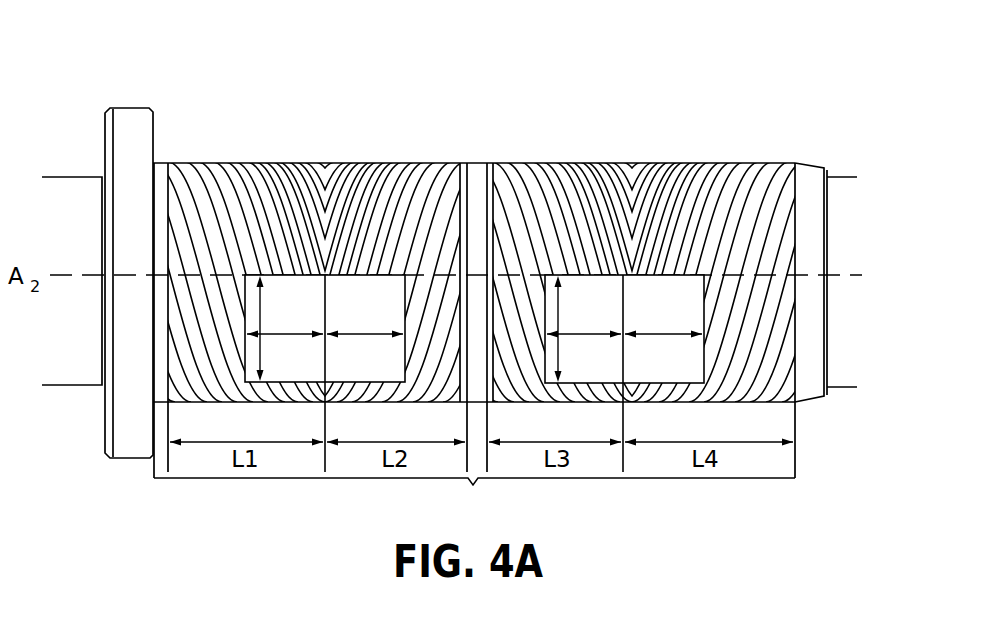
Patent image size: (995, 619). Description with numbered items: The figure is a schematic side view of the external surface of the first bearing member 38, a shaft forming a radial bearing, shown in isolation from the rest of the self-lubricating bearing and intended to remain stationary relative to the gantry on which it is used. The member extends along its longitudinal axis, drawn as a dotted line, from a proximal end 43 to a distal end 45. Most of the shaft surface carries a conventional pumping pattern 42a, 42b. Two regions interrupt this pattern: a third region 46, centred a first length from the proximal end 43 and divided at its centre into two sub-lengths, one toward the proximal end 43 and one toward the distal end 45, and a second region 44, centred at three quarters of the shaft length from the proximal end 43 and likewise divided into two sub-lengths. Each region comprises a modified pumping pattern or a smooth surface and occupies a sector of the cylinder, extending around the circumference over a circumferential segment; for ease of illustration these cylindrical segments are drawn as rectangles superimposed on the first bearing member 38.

The first bearing member 38 is at (827, 224).
The conventional pumping pattern 42a is at (573, 170).
The conventional pumping pattern 42b is at (281, 170).
The proximal end 43 is at (119, 117).
The second region 44 is at (660, 293).
The distal end 45 is at (806, 177).
The third region 46 is at (358, 293).